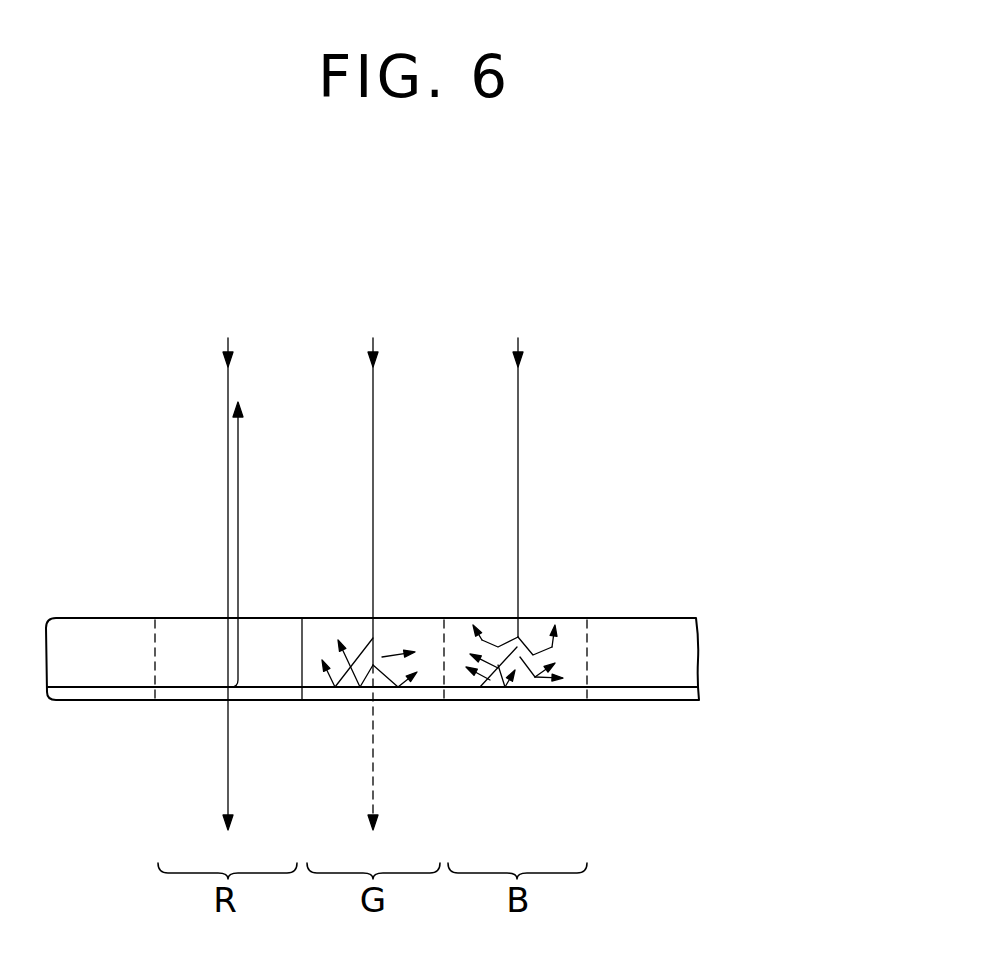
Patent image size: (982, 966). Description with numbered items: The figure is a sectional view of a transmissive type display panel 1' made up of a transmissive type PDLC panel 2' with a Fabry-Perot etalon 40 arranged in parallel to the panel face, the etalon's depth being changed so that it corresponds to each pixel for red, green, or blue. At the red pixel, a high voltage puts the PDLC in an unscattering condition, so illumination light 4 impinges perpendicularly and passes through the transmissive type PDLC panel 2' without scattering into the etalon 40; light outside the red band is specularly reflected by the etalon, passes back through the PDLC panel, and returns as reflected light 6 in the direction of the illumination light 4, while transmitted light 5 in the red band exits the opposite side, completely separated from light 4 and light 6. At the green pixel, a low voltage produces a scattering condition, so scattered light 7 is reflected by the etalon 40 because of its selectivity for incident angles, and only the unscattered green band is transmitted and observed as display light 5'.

The transmissive type display panel 1' is at (472, 659).
The transmissive type PDLC panel 2' is at (493, 656).
The Fabry-Perot etalon 40 is at (688, 695).
The light 4 is at (233, 358).
The light transmitted through the etalon 5 is at (260, 765).
The display light 5' is at (407, 747).
The reflected light 6 is at (242, 408).
The scattered light 7 is at (362, 650).